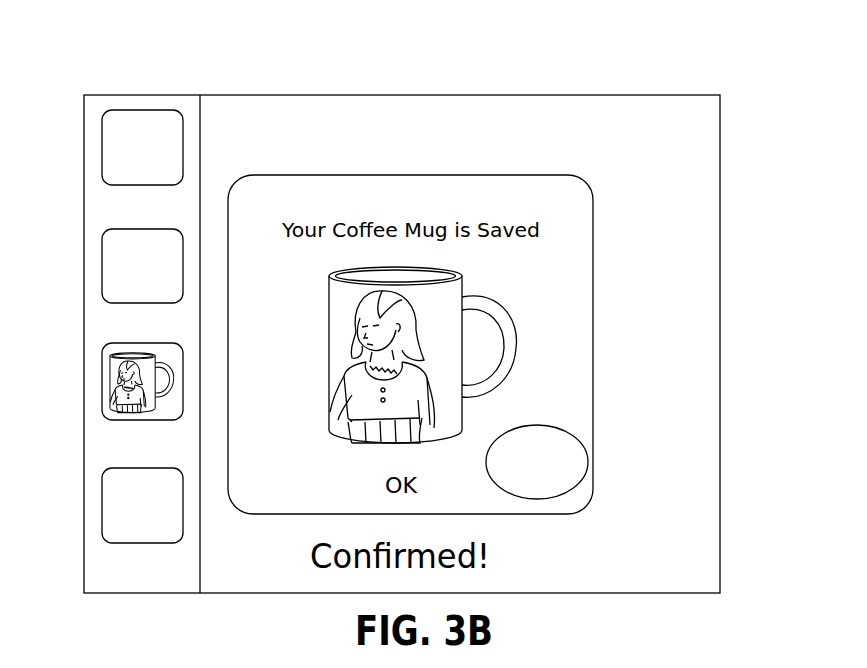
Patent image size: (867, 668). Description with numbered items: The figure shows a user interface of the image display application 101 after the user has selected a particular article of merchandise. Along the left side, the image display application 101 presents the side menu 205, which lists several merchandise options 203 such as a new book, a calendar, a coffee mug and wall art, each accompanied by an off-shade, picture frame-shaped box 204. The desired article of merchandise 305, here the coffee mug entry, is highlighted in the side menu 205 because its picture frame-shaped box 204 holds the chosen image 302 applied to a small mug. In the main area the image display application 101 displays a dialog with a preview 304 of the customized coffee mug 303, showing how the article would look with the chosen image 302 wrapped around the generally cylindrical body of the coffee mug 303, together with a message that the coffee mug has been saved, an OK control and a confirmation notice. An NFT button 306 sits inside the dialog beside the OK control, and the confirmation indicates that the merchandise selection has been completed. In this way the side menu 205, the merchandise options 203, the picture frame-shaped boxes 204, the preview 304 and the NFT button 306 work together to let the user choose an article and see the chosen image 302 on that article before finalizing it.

The image display application 101 is at (716, 150).
The side menu 205 is at (190, 107).
The picture frame-shaped box 204 is at (102, 133).
The merchandise option 203 is at (97, 201).
The chosen image 302 is at (102, 380).
The desired article of merchandise 305 is at (90, 441).
The coffee mug 303 is at (467, 297).
The preview 304 is at (403, 379).
The NFT button 306 is at (593, 462).